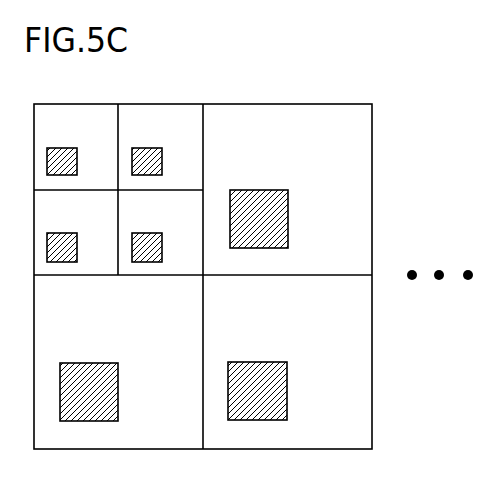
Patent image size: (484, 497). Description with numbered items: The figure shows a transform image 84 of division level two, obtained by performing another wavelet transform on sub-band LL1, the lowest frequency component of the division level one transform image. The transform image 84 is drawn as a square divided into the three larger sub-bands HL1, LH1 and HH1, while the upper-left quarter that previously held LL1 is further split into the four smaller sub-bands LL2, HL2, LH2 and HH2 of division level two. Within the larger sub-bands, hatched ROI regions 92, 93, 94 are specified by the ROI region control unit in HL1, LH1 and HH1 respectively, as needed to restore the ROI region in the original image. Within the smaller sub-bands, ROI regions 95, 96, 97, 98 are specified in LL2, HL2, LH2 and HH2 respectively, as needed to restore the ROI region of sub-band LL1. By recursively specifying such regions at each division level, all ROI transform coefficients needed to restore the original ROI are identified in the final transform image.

The transform image of division level "2" 84 is at (317, 103).
The ROI region 92 is at (288, 217).
The ROI region 93 is at (118, 389).
The ROI region 94 is at (287, 388).
The ROI region 95 is at (78, 160).
The ROI region 96 is at (163, 160).
The ROI region 97 is at (78, 245).
The ROI region 98 is at (163, 245).